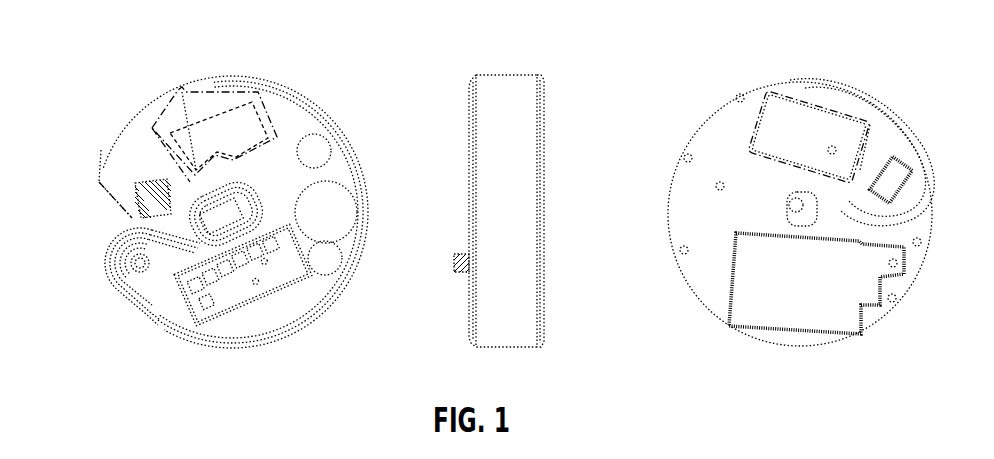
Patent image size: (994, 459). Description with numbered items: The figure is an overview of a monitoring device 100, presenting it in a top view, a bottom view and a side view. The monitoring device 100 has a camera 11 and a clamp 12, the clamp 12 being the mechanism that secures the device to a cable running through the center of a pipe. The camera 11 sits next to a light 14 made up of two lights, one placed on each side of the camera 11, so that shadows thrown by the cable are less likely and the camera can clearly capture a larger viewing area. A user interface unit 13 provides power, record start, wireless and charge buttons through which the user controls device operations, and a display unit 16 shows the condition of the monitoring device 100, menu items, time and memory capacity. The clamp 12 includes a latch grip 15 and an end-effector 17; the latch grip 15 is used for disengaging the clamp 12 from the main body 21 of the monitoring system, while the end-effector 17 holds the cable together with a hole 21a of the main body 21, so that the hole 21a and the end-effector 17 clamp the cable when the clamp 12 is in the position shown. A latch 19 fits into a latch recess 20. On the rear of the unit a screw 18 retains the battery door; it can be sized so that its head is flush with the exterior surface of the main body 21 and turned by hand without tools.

The monitoring device 100 is at (232, 74).
The camera 11 is at (335, 192).
The clamp 12 is at (122, 150).
The user interface unit 13 is at (262, 288).
The light 14 is at (317, 148).
The latch grip 15 is at (138, 193).
The display unit 16 is at (252, 112).
The end-effector 17 is at (807, 210).
The screw 18 is at (145, 272).
The latch 19 is at (185, 233).
The latch recess 20 is at (166, 144).
The main body 21 is at (730, 122).
The hole 21a is at (797, 197).